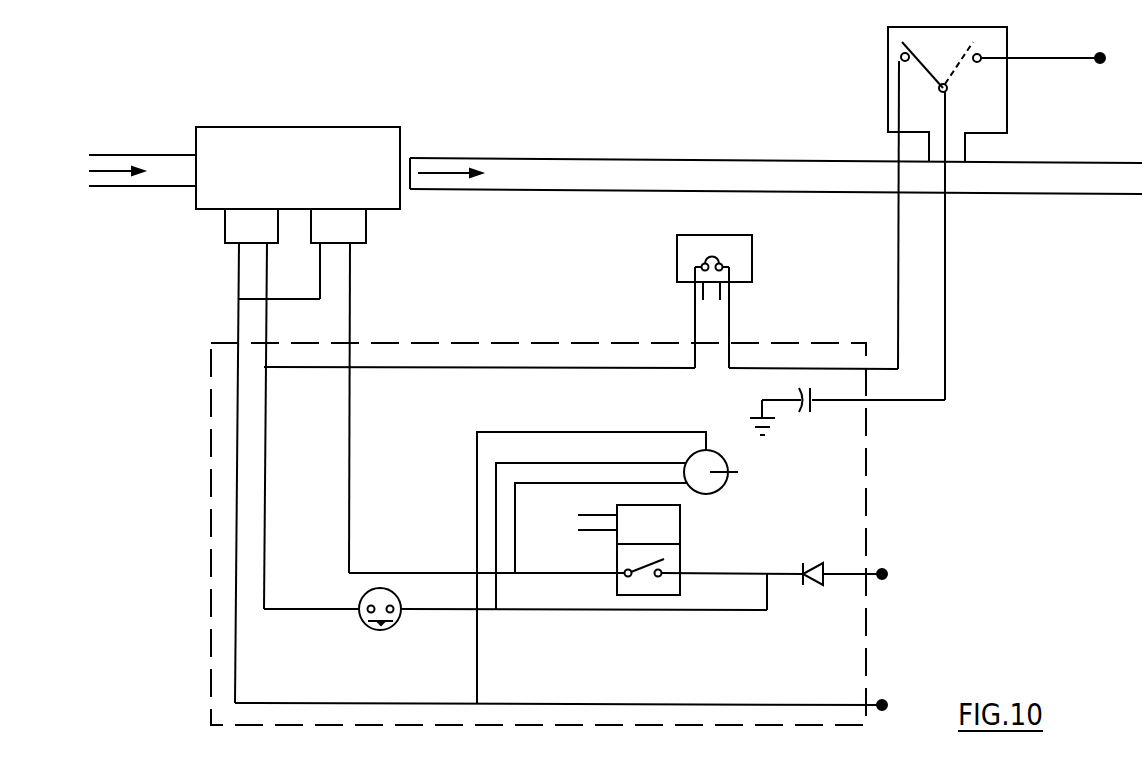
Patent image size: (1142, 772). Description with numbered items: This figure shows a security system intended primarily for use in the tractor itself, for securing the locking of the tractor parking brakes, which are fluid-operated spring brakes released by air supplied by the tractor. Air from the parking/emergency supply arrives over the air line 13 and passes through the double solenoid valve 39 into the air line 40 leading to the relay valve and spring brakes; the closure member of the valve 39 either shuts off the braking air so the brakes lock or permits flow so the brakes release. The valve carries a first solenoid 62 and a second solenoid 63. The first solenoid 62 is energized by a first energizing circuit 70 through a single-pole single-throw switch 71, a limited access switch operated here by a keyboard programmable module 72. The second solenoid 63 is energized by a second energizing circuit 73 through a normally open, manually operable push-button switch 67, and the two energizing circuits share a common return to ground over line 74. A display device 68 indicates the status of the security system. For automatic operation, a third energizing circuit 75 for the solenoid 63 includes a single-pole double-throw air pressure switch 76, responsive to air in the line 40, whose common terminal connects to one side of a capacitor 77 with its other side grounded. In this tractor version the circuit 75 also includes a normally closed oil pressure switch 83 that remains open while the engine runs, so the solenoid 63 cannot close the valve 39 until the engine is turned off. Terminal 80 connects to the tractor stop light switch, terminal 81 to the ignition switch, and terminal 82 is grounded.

The air line 13 is at (142, 152).
The double solenoid valve 39 is at (389, 127).
The air line 40 is at (550, 157).
The first solenoid 62 is at (366, 232).
The second solenoid 63 is at (225, 243).
The push-button switch 67 is at (362, 622).
The display device 68 is at (715, 451).
The first energizing circuit 70 is at (351, 305).
The single-pole single-throw switch 71 is at (627, 585).
The keyboard programmable module 72 is at (670, 523).
The second energizing circuit 73 is at (266, 420).
The common return line 74 is at (236, 529).
The third energizing circuit 75 is at (640, 344).
The single-pole double-throw switch 76 is at (888, 72).
The capacitor 77 is at (812, 408).
The terminal 80 is at (1057, 60).
The terminal 81 is at (859, 574).
The terminal 82 is at (575, 708).
The oil pressure switch 83 is at (752, 260).